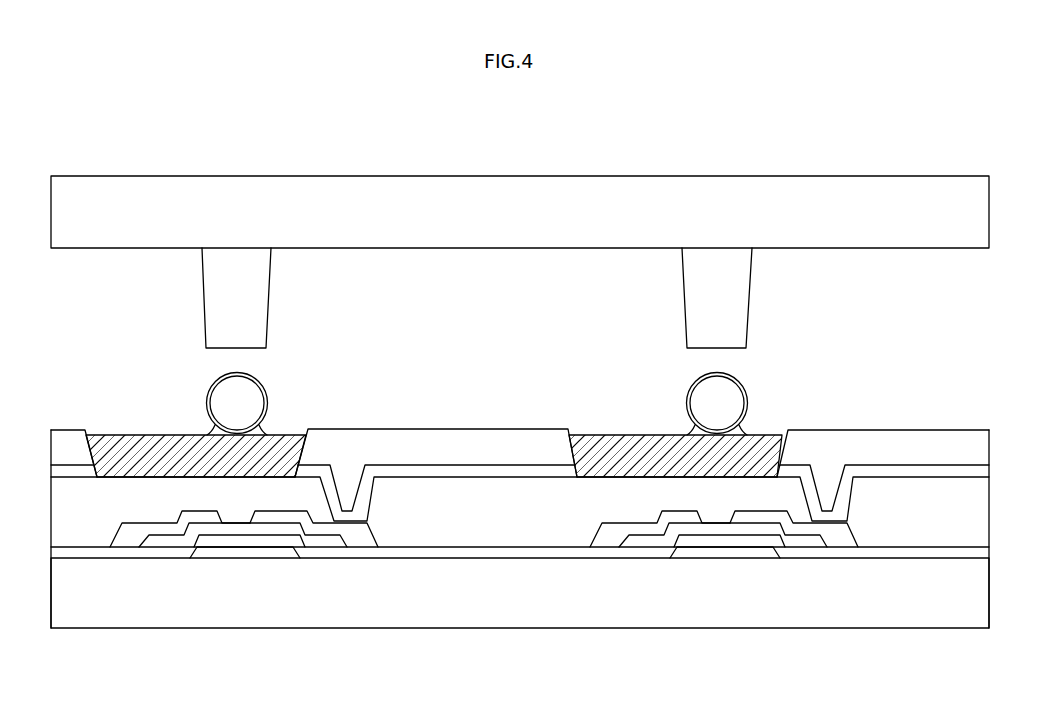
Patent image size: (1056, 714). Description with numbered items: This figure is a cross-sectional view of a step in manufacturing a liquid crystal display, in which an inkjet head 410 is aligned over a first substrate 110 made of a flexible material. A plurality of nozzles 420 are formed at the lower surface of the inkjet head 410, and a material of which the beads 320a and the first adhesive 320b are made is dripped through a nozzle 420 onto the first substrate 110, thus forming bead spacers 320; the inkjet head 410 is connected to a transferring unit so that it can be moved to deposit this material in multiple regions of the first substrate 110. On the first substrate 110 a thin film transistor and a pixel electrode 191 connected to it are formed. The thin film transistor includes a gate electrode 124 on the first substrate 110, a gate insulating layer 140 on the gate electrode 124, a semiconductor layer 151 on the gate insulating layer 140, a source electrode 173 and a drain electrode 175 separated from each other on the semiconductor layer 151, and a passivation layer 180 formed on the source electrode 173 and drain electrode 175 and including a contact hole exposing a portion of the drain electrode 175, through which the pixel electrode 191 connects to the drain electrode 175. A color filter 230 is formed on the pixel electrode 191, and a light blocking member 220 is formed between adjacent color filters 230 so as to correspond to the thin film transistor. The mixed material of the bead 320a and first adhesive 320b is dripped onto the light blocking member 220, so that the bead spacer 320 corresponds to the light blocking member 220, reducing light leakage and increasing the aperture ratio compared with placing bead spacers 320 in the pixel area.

The first substrate 110 is at (600, 600).
The gate electrode 124 is at (224, 553).
The gate insulating layer 140 is at (433, 552).
The semiconductor layer 151 is at (263, 532).
The source electrode 173 is at (133, 541).
The drain electrode 175 is at (357, 540).
The passivation layer 180 is at (505, 525).
The pixel electrode 191 is at (398, 472).
The light blocking member 220 is at (112, 445).
The color filter 230 is at (518, 447).
The bead spacer 320 is at (403, 377).
The bead 320a is at (228, 393).
The first adhesive 320b is at (207, 400).
The inkjet head 410 is at (973, 211).
The nozzle 420 is at (737, 300).